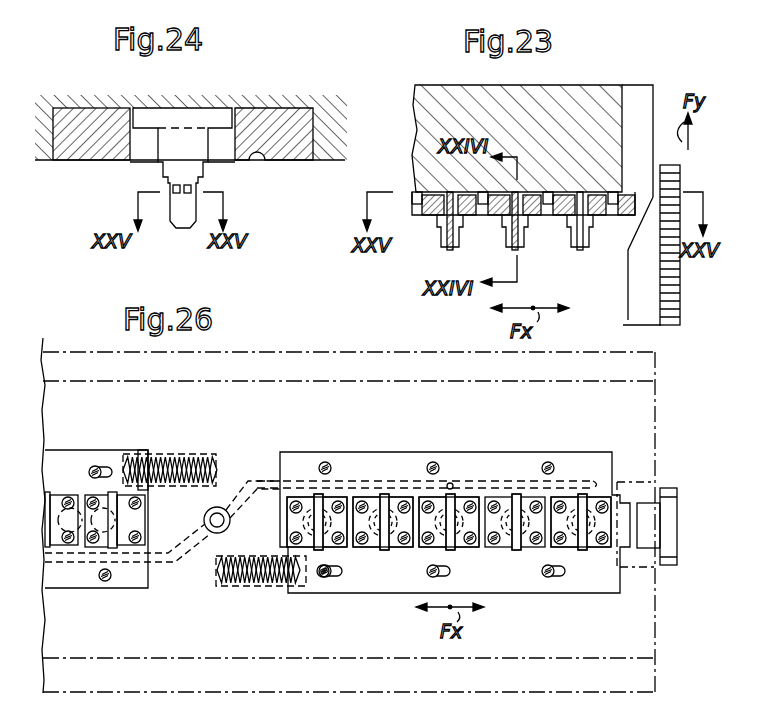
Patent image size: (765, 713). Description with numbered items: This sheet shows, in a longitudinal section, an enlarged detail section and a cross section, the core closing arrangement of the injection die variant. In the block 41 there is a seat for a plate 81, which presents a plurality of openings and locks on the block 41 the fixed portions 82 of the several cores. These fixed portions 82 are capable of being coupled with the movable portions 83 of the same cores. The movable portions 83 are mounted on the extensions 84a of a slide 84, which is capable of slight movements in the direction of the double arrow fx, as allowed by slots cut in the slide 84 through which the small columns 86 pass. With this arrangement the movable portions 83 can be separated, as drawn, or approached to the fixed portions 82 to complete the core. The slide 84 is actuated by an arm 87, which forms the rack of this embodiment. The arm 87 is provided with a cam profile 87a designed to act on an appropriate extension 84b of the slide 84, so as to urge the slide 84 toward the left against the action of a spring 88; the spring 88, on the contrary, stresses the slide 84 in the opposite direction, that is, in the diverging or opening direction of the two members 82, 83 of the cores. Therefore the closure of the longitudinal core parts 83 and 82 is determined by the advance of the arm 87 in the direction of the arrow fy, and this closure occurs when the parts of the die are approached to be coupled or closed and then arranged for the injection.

In FIG. 24, the block 41 is at (344, 156).
In FIG. 23, the block 41 is at (420, 100).
In FIG. 26, the block 41 is at (638, 428).
In FIG. 24, the plate 81 is at (293, 148).
In FIG. 23, the plate 81 is at (560, 213).
In FIG. 26, the plate 81 is at (507, 458).
In FIG. 24, the fixed portions of the cores 82 is at (162, 167).
In FIG. 23, the fixed portions of the cores 82 is at (440, 192).
In FIG. 26, the fixed portions of the cores 82 is at (375, 500).
In FIG. 23, the movable portions of the cores 83 is at (620, 195).
In FIG. 26, the movable portions of the cores 83 is at (394, 543).
In FIG. 24, the slide 84 is at (80, 148).
In FIG. 26, the slide 84 is at (357, 582).
In FIG. 23, the extensions of the slide 84a is at (478, 216).
In FIG. 26, the extensions of the slide 84a is at (345, 497).
In FIG. 23, the extension of the slide 84b is at (652, 192).
In FIG. 26, the extension of the slide 84b is at (623, 548).
In FIG. 26, the small columns 86 is at (323, 575).
In FIG. 23, the arm 87 is at (675, 307).
In FIG. 26, the arm 87 is at (673, 533).
In FIG. 23, the cam profile 87a is at (632, 309).
In FIG. 26, the cam profile 87a is at (645, 505).
In FIG. 26, the spring 88 is at (225, 592).